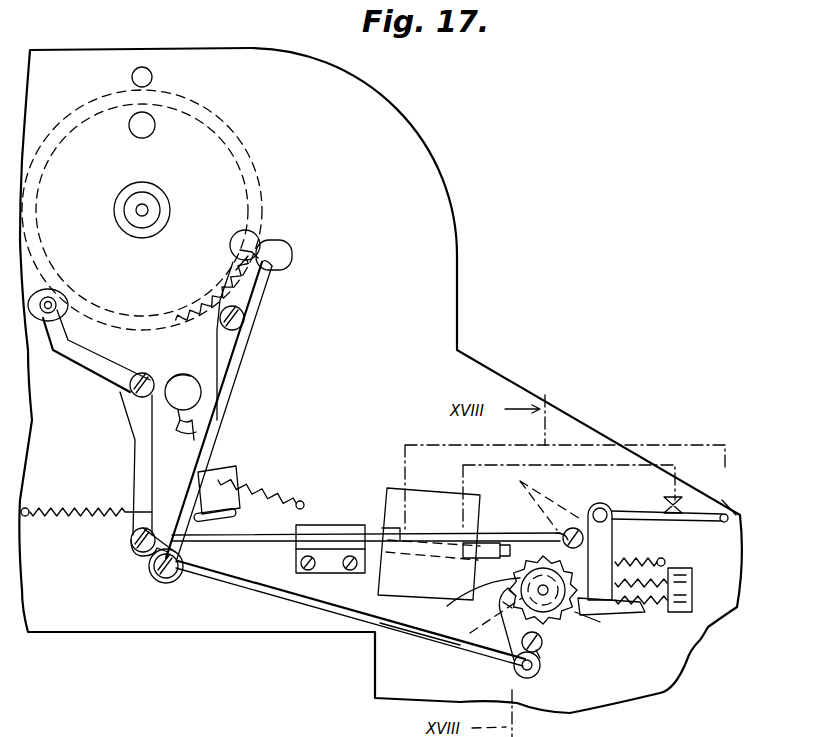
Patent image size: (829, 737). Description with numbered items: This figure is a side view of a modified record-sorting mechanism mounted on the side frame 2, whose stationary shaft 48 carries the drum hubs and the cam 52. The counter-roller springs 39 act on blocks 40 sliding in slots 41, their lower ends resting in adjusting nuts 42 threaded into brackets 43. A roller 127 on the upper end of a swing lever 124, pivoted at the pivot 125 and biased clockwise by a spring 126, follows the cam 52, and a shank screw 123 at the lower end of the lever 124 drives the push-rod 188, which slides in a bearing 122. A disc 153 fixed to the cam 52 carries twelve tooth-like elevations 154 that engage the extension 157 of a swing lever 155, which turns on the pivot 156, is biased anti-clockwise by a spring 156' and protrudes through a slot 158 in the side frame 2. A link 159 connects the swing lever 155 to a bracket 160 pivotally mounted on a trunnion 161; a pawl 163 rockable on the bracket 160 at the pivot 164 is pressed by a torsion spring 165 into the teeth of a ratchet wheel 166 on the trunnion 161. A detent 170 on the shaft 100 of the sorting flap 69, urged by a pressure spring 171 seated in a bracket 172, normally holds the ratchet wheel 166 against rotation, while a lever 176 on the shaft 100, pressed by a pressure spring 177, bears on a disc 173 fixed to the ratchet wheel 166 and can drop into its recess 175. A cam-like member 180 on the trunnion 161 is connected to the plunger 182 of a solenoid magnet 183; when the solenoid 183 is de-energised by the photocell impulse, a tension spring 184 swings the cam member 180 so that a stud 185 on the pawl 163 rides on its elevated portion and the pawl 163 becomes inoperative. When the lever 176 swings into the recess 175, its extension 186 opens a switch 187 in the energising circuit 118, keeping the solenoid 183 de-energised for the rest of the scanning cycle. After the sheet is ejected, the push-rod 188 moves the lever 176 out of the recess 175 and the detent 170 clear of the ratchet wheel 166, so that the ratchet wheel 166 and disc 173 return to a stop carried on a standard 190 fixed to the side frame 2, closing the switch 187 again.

The side frame 2 is at (408, 155).
The cam 52 is at (78, 95).
The stationary shaft 48 is at (148, 200).
The roller 127 is at (58, 298).
The swing lever 124 is at (133, 440).
The pivot 125 is at (130, 388).
The spring 126 is at (56, 516).
The shank screw 123 is at (134, 548).
The disc 153 is at (248, 235).
The extension 157 is at (258, 252).
The slot 158 is at (290, 258).
The pivot 156 is at (263, 319).
The tooth-like elevations 154 is at (190, 320).
The swing lever 155 is at (228, 376).
The blocks 40 is at (190, 395).
The slots 41 is at (190, 377).
The springs 39 is at (188, 440).
The brackets 43 is at (218, 480).
The spring 156' is at (263, 481).
The adjusting nuts 42 is at (238, 516).
The ratchet wheel 166 is at (560, 612).
The link 159 is at (343, 613).
The cam-like member 180 is at (446, 640).
The push-rod 188 is at (262, 542).
The bearing 122 is at (330, 528).
The solenoid magnet 183 is at (432, 502).
The plunger 182 is at (486, 558).
The sorting flap 69 is at (551, 495).
The shaft 100 is at (600, 508).
The lever 176 is at (605, 550).
The standard 190 is at (566, 534).
The extension 186 is at (633, 511).
The switch 187 is at (676, 513).
The circuit 118 is at (722, 500).
The tension spring 184 is at (638, 565).
The pressure spring 171 is at (640, 583).
The pressure spring 177 is at (690, 592).
The bracket 172 is at (680, 580).
The detent 170 is at (604, 602).
The recess 175 is at (576, 614).
The disc 173 is at (548, 622).
The torsion spring 165 is at (520, 654).
The pawl 163 is at (506, 608).
The stud 185 is at (510, 592).
The trunnion 161 is at (455, 603).
The pivot 164 is at (541, 646).
The bracket 160 is at (532, 672).